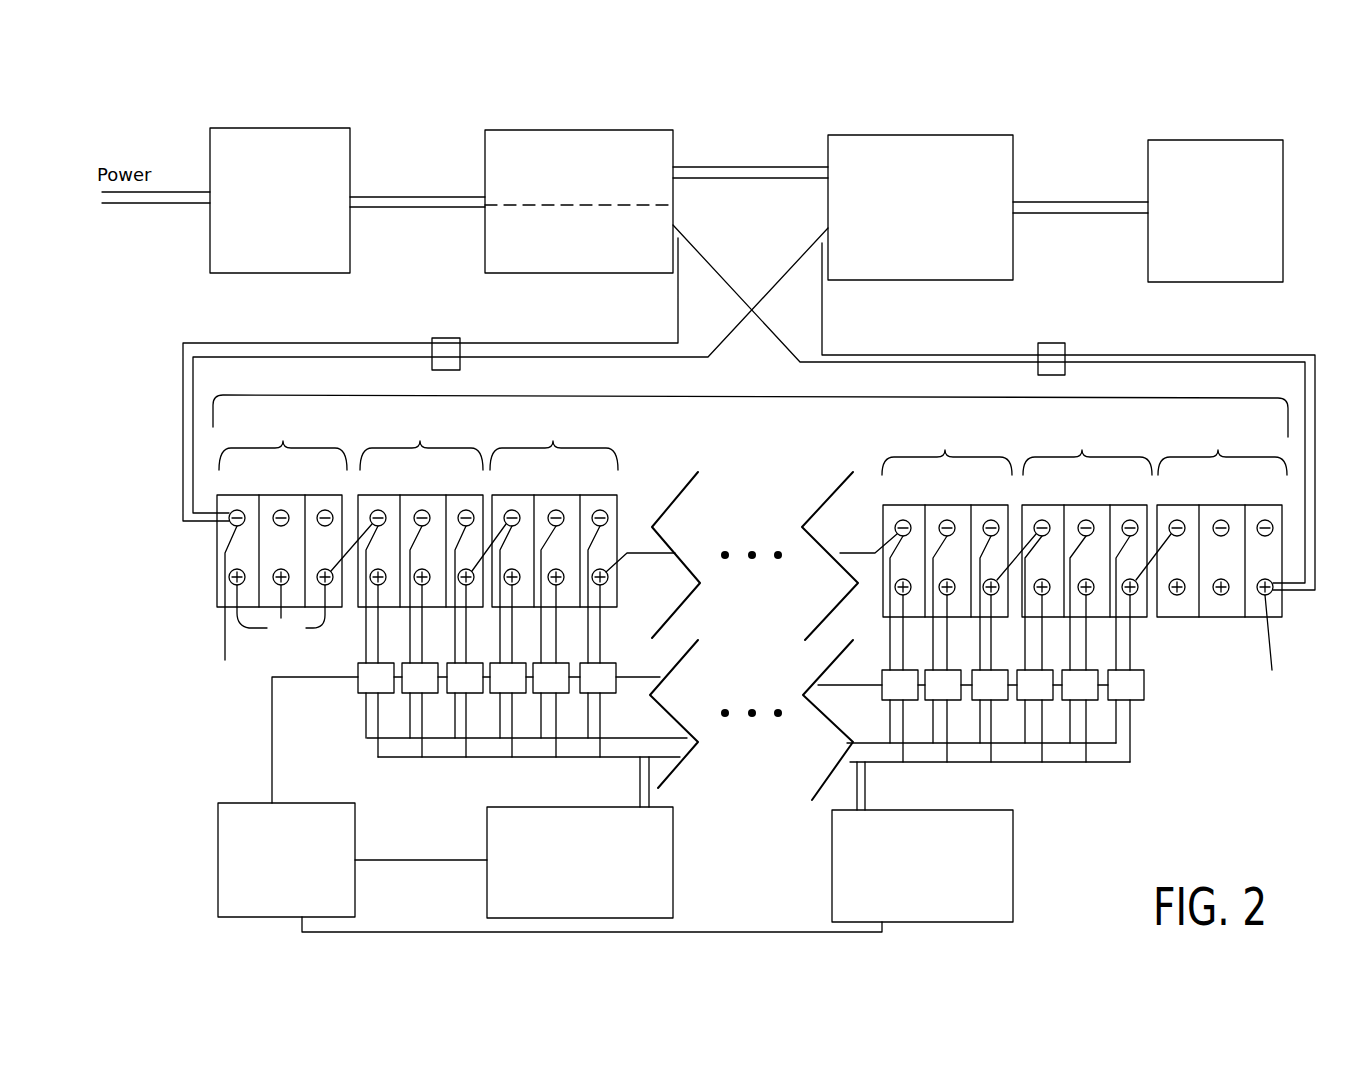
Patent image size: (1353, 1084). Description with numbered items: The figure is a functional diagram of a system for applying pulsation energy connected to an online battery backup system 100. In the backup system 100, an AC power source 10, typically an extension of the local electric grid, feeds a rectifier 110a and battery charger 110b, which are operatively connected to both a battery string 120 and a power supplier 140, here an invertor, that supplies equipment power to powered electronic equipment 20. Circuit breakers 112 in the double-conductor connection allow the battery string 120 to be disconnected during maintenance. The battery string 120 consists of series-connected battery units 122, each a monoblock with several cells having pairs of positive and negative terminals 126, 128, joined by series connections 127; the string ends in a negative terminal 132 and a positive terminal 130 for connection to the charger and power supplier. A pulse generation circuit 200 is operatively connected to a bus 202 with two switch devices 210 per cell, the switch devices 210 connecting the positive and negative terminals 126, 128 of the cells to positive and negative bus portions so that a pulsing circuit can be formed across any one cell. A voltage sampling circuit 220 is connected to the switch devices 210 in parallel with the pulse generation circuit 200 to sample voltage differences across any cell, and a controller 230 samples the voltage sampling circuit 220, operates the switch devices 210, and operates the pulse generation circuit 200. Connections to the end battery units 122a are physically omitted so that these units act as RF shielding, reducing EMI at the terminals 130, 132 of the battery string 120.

The online battery backup system 100 is at (1107, 104).
The AC power source 10 is at (280, 200).
The rectifier 110a is at (579, 201).
The battery charger 110b is at (579, 227).
The power supplier 140 is at (920, 207).
The powered electronic equipment 20 is at (1215, 211).
The circuit breakers 112 is at (446, 338).
The battery string 120 is at (753, 396).
The battery units 122 is at (420, 441).
The end battery units 122a is at (283, 441).
The positive terminal 126 is at (281, 617).
The series connections 127 is at (1152, 577).
The negative terminal 128 is at (1221, 520).
The positive terminal of the battery string 130 is at (1272, 648).
The negative terminal of the battery string 132 is at (231, 607).
The switch devices 210 is at (358, 688).
The bus 202 is at (387, 760).
The controller 230 is at (286, 860).
The voltage sampling circuit 220 is at (580, 862).
The pulse generation circuit 200 is at (922, 866).